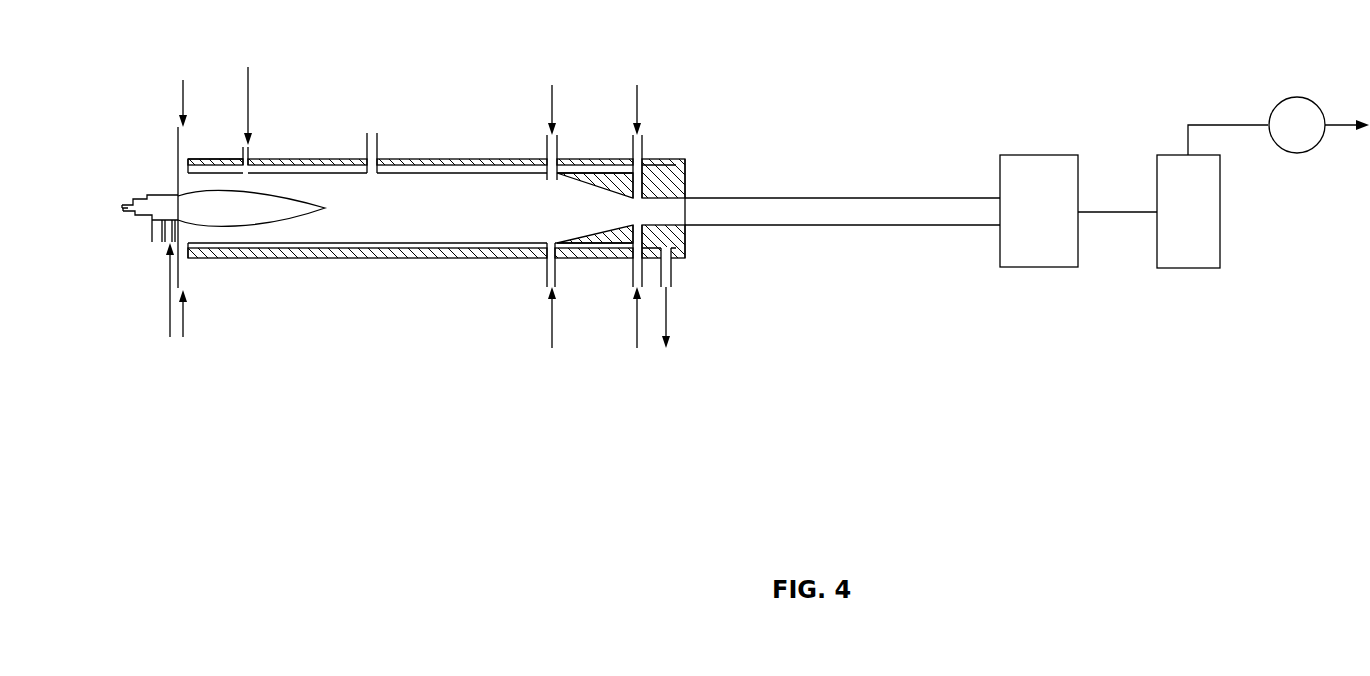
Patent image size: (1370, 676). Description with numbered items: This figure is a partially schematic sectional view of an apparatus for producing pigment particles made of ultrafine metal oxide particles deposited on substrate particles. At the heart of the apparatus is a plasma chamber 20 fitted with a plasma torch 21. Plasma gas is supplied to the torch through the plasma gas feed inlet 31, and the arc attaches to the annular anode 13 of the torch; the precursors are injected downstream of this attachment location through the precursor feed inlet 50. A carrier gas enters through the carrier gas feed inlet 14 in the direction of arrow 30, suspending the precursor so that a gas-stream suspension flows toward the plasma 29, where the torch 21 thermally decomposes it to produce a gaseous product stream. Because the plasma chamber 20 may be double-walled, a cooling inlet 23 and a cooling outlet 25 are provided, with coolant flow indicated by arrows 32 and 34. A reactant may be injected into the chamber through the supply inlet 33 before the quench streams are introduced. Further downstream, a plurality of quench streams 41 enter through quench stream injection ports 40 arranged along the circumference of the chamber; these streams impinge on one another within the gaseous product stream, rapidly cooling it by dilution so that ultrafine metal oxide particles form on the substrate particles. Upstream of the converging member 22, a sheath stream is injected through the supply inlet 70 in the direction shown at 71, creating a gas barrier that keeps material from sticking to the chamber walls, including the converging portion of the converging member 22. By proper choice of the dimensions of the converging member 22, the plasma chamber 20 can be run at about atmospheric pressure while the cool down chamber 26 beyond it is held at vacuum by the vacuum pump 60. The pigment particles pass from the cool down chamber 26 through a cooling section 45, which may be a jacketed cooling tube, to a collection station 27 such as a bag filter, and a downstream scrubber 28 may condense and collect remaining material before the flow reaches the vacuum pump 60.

The annular anode 13 is at (162, 195).
The carrier gas feed inlet 14 is at (168, 240).
The plasma chamber 20 is at (387, 286).
The plasma torch 21 is at (190, 158).
The converging member 22 is at (558, 182).
The cooling inlet 23 is at (249, 150).
The cooling outlet 25 is at (672, 270).
The cool down chamber 26 is at (673, 193).
The collection station 27 is at (1053, 227).
The scrubber 28 is at (1202, 227).
The plasma 29 is at (258, 210).
The carrier gas flow arrow 30 is at (168, 308).
The plasma gas feed inlet 31 is at (124, 204).
The coolant inflow arrow 32 is at (249, 84).
The reactant supply inlet 33 is at (378, 145).
The coolant outflow arrow 34 is at (668, 315).
The quench stream injection ports 40 is at (632, 146).
The quench streams 41 is at (637, 87).
The cooling section 45 is at (922, 198).
The precursor feed inlet 50 is at (153, 228).
The vacuum pump 60 is at (1297, 97).
The sheath stream supply inlet 70 is at (178, 137).
The sheath stream flow direction 71 is at (181, 95).